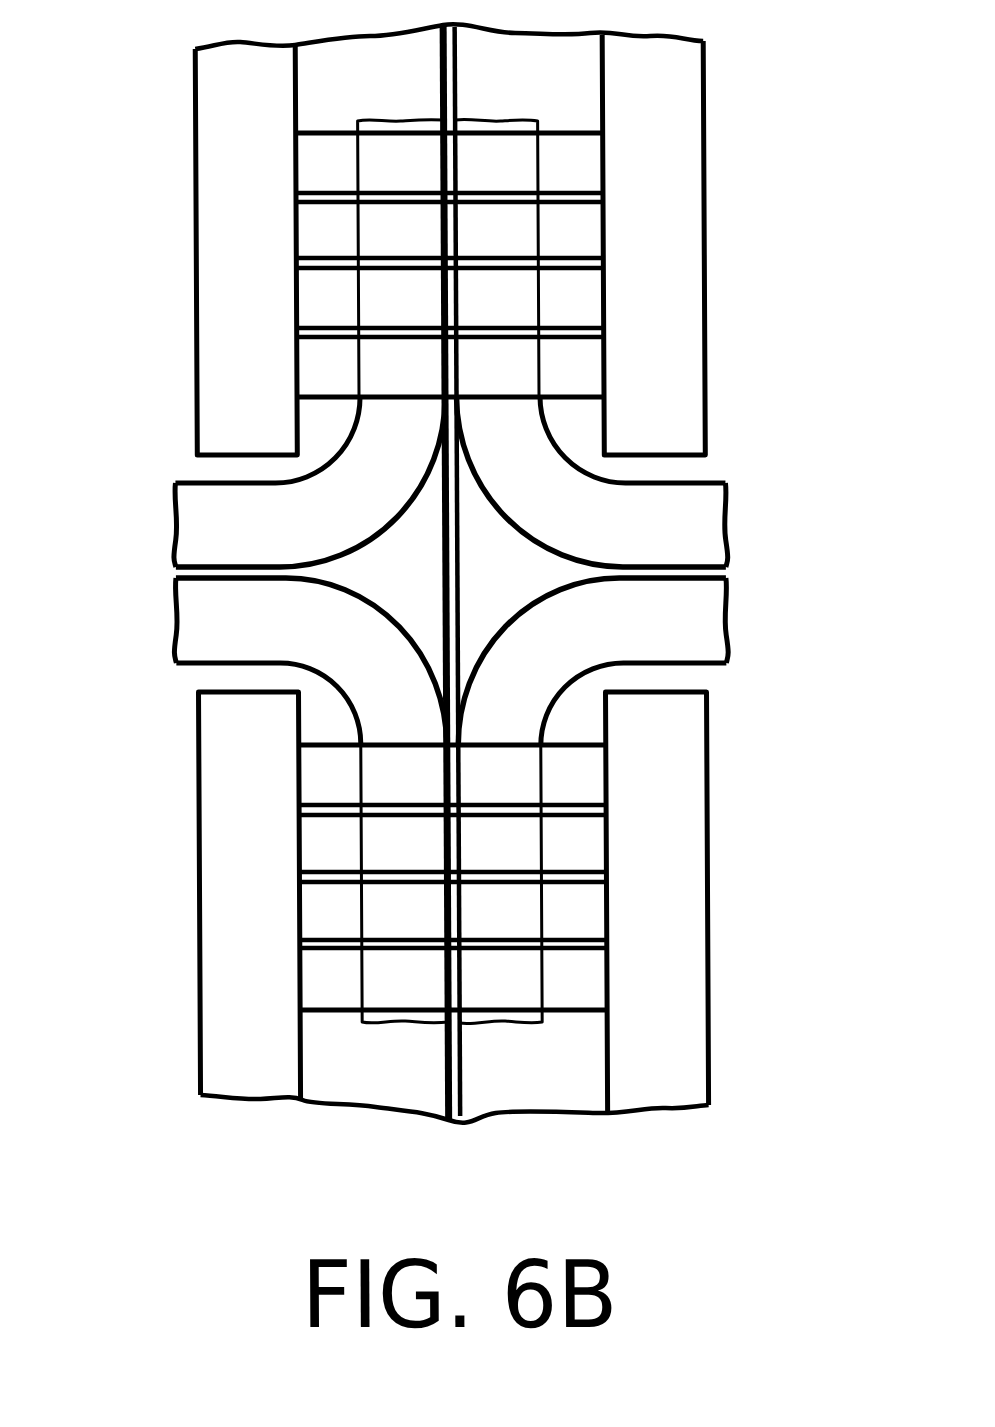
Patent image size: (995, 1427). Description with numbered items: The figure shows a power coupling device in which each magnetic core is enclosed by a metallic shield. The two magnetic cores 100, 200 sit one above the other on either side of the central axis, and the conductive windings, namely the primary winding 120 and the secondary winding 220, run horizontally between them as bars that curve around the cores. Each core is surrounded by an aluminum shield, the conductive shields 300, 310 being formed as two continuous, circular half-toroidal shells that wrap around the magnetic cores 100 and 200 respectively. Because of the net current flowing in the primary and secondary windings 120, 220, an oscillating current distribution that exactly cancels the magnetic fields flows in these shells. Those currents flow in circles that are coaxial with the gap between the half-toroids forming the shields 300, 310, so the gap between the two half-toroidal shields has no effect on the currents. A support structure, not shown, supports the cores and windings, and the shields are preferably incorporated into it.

The magnetic core 100 is at (572, 912).
The primary winding 120 is at (206, 625).
The magnetic core 200 is at (573, 370).
The secondary winding 220 is at (206, 525).
The aluminum shield 300 is at (230, 997).
The aluminum shield 310 is at (220, 315).